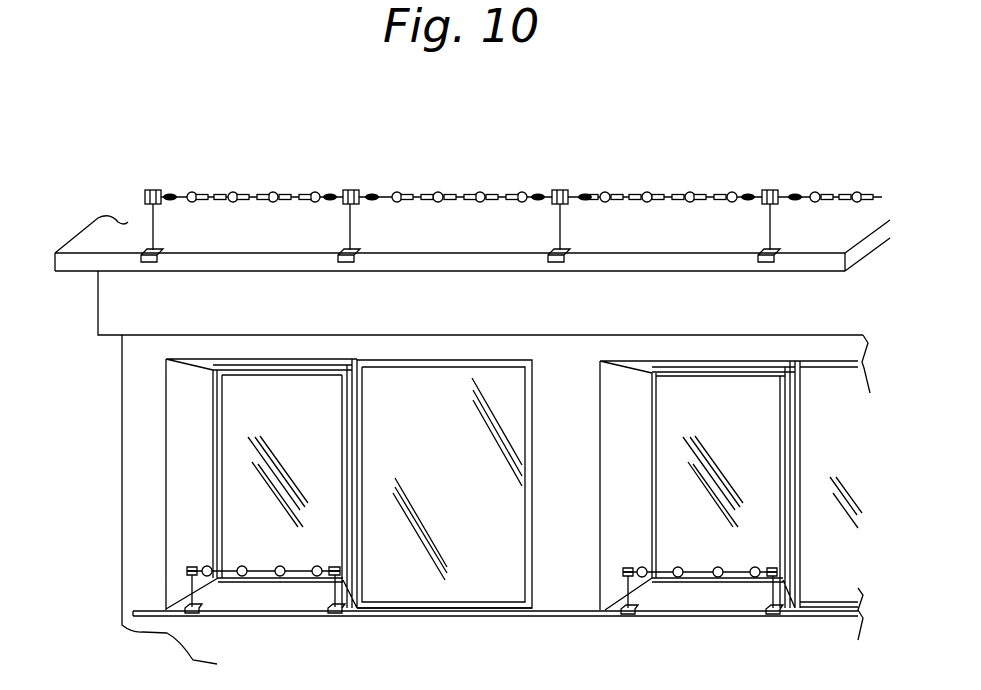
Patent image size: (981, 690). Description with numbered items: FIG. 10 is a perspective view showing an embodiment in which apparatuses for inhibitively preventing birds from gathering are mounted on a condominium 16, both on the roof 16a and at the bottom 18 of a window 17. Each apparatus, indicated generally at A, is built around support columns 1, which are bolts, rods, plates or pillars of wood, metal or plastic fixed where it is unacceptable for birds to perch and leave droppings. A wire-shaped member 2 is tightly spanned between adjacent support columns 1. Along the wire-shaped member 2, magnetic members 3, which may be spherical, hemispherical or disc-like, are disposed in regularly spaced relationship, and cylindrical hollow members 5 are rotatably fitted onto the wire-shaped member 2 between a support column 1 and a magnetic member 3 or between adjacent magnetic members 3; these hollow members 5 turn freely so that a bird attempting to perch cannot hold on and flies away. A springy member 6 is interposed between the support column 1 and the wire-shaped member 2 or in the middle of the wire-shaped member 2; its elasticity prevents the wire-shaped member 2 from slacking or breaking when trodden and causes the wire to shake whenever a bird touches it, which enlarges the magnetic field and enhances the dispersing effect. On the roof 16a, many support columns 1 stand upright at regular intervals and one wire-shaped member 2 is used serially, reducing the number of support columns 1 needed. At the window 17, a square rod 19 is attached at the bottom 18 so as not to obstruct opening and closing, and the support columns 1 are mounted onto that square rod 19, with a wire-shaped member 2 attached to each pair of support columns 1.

The support column 1 is at (153, 238).
The wire-shaped member 2 is at (295, 202).
The magnetic member 3 is at (232, 193).
The cylindrical hollow member 5 is at (220, 193).
The springy member 6 is at (170, 192).
The condominium 16 is at (132, 390).
The roof 16a is at (108, 240).
The window 17 is at (270, 383).
The bottom of the window 18 is at (275, 598).
The square rod 19 is at (490, 613).
The bird repellent assembly A is at (335, 158).